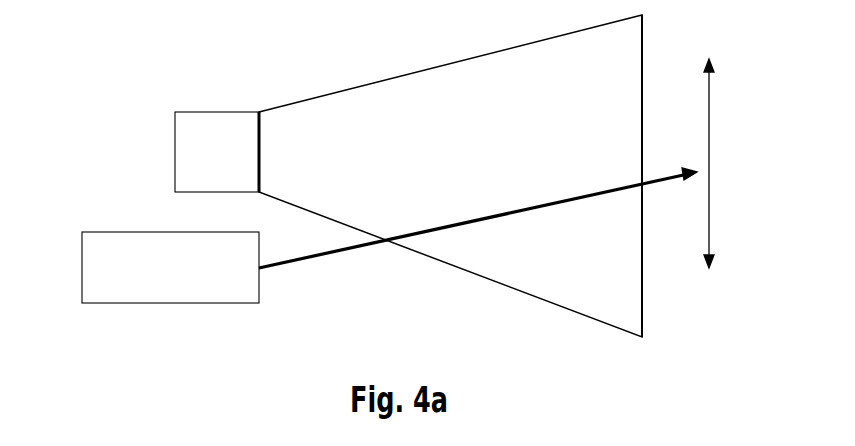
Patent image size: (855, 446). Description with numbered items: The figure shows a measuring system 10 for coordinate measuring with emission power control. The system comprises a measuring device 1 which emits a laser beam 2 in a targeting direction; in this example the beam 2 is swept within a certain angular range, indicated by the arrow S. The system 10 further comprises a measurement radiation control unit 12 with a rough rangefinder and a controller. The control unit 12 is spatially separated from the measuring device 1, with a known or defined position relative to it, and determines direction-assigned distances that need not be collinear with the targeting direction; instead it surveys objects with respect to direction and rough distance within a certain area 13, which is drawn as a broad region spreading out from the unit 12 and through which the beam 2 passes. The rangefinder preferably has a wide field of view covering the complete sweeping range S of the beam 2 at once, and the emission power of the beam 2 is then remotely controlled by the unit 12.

The measuring system 10 is at (102, 99).
The measurement radiation control unit 12 is at (229, 164).
The area 13 is at (322, 118).
The measuring device 1 is at (178, 282).
The laser beam 2 is at (287, 257).
The arrow indicating sweeping range S is at (710, 205).